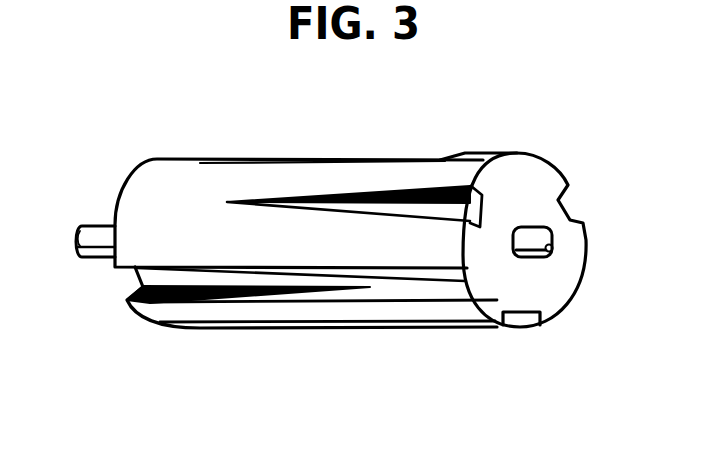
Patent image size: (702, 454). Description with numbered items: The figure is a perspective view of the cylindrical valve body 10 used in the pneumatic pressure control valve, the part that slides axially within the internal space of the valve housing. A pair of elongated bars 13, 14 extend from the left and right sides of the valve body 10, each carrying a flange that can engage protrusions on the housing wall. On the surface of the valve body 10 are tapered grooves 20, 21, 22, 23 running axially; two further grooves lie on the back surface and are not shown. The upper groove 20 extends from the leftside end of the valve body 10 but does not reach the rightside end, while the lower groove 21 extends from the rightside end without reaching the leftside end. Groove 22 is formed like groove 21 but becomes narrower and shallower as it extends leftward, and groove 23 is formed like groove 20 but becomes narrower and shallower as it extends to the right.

The valve body 10 is at (535, 140).
The elongated bar 13 is at (543, 233).
The elongated bar 14 is at (93, 226).
The upper groove 20 is at (295, 155).
The lower groove 21 is at (338, 327).
The groove 22 is at (418, 207).
The groove 23 is at (177, 278).